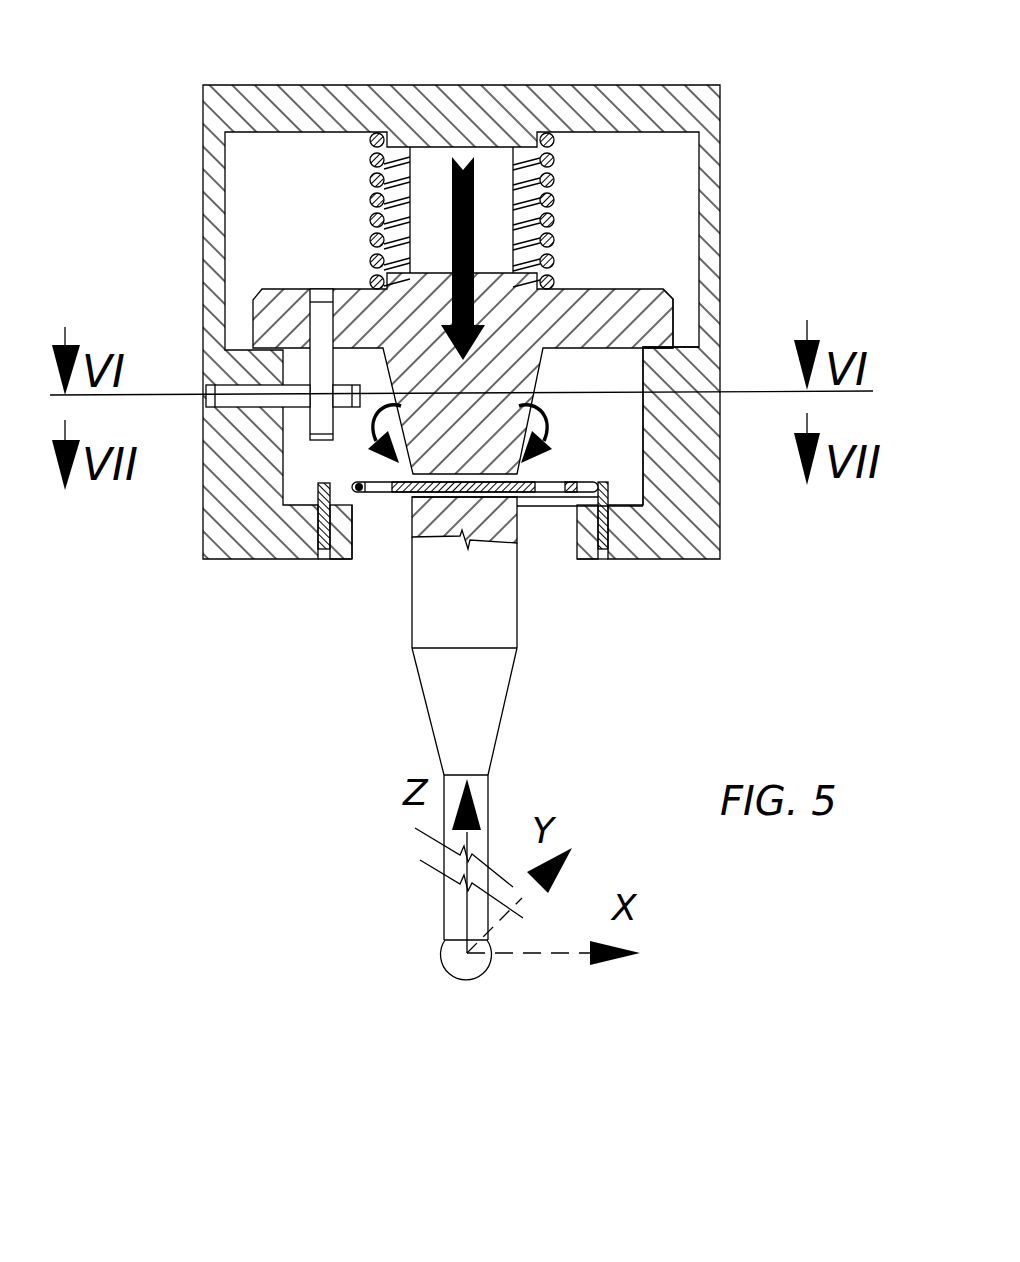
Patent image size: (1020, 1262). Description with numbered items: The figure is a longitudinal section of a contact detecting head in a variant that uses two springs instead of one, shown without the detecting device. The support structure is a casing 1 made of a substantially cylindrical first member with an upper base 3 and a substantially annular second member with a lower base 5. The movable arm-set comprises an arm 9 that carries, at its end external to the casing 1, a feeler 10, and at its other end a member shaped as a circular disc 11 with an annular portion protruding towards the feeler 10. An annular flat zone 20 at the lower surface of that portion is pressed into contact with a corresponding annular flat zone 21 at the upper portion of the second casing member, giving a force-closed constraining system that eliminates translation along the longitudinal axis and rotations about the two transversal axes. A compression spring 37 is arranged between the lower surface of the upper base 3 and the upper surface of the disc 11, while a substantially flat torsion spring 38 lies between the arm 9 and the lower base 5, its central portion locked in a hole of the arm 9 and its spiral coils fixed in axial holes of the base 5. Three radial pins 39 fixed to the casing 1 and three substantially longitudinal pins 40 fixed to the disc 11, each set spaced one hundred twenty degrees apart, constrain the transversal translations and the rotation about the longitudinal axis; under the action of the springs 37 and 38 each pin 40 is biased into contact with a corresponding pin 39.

The casing 1 is at (160, 240).
The upper base 3 is at (592, 110).
The lower base 5 is at (267, 542).
The arm 9 is at (483, 694).
The feeler 10 is at (463, 968).
The circular disc 11 is at (583, 310).
The annular flat zone 20 is at (651, 337).
The annular flat zone 21 is at (668, 350).
The compression spring 37 is at (555, 150).
The torsion spring 38 is at (378, 488).
The radial pin 39 is at (237, 387).
The longitudinal pin 40 is at (320, 322).